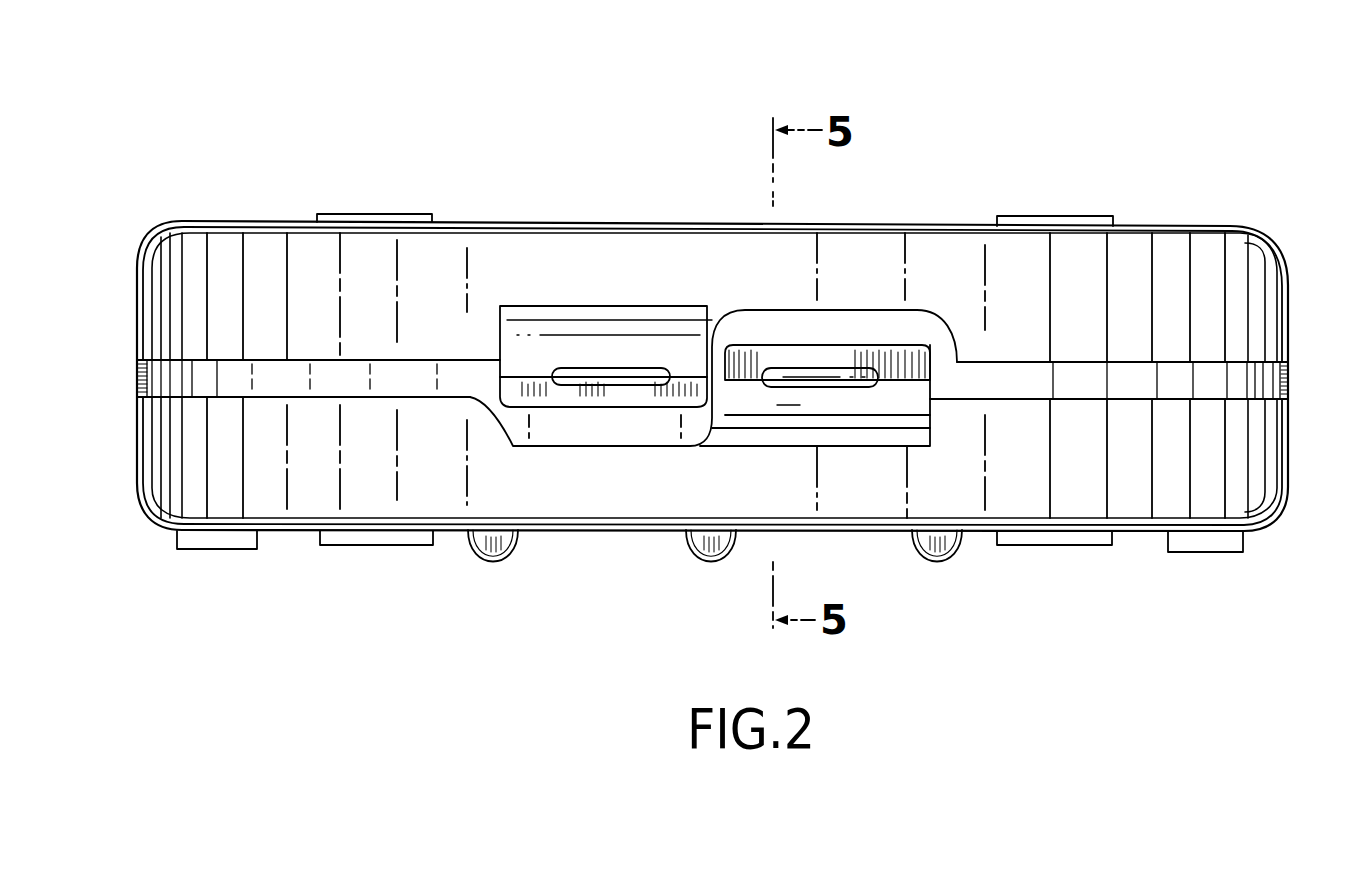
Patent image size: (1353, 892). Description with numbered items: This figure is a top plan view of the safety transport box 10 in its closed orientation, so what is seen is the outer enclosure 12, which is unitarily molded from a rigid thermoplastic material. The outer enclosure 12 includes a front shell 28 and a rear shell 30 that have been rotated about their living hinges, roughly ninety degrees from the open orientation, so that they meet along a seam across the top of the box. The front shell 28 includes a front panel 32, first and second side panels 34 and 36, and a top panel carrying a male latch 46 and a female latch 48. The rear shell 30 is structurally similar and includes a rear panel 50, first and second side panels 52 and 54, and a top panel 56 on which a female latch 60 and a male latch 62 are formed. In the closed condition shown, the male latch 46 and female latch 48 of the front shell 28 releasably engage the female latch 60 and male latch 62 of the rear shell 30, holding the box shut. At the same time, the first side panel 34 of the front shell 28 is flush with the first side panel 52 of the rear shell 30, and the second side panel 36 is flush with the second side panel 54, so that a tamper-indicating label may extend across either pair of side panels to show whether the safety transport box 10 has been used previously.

The safety transport box 10 is at (442, 140).
The outer enclosure 12 is at (524, 172).
The front shell 28 is at (144, 220).
The rear shell 30 is at (143, 527).
The front panel 32 is at (247, 237).
The first side panel 34 is at (1288, 283).
The second side panel 36 is at (137, 288).
The male latch 46 is at (838, 370).
The female latch 48 is at (500, 400).
The rear panel 50 is at (973, 533).
The first side panel 52 is at (1288, 447).
The second side panel 54 is at (137, 438).
The top panel 56 is at (1133, 503).
The female latch 60 is at (740, 350).
The male latch 62 is at (617, 377).